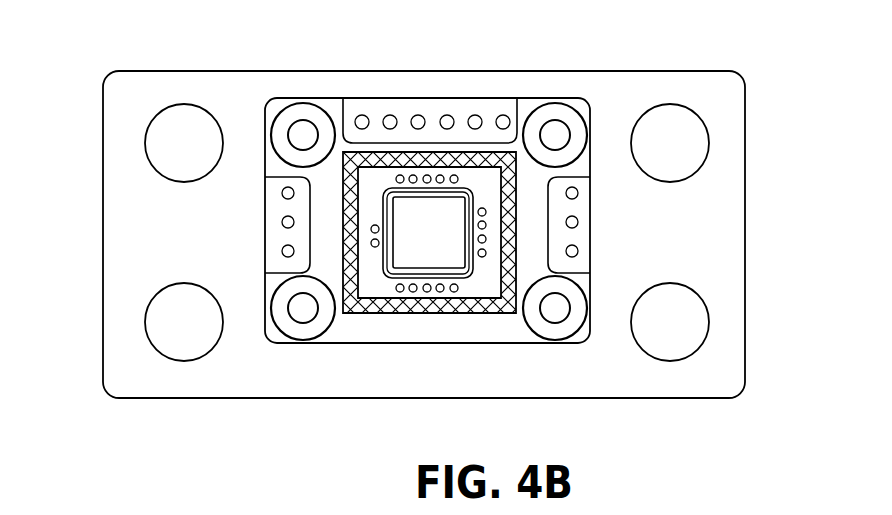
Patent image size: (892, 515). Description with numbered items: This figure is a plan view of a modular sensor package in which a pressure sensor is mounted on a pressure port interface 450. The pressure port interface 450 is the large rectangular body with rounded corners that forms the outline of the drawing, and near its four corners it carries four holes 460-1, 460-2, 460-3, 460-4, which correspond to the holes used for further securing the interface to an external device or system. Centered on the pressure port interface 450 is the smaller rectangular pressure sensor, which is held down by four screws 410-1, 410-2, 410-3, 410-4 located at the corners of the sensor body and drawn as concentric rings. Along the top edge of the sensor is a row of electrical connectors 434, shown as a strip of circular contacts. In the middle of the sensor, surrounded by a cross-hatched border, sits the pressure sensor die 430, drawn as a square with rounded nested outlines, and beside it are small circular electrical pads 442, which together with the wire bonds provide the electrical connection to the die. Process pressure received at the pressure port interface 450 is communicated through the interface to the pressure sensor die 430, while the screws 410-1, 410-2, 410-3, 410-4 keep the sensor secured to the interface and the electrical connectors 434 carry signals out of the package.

The pressure port interface 450 is at (103, 275).
The hole 460-1 is at (187, 362).
The hole 460-2 is at (709, 322).
The hole 460-3 is at (709, 143).
The hole 460-4 is at (167, 105).
The screw 410-1 is at (280, 335).
The screw 410-2 is at (527, 319).
The screw 410-3 is at (545, 104).
The screw 410-4 is at (292, 104).
The electrical connectors 434 is at (419, 98).
The pressure sensor die 430 is at (444, 241).
The electrical pads 442 is at (499, 237).